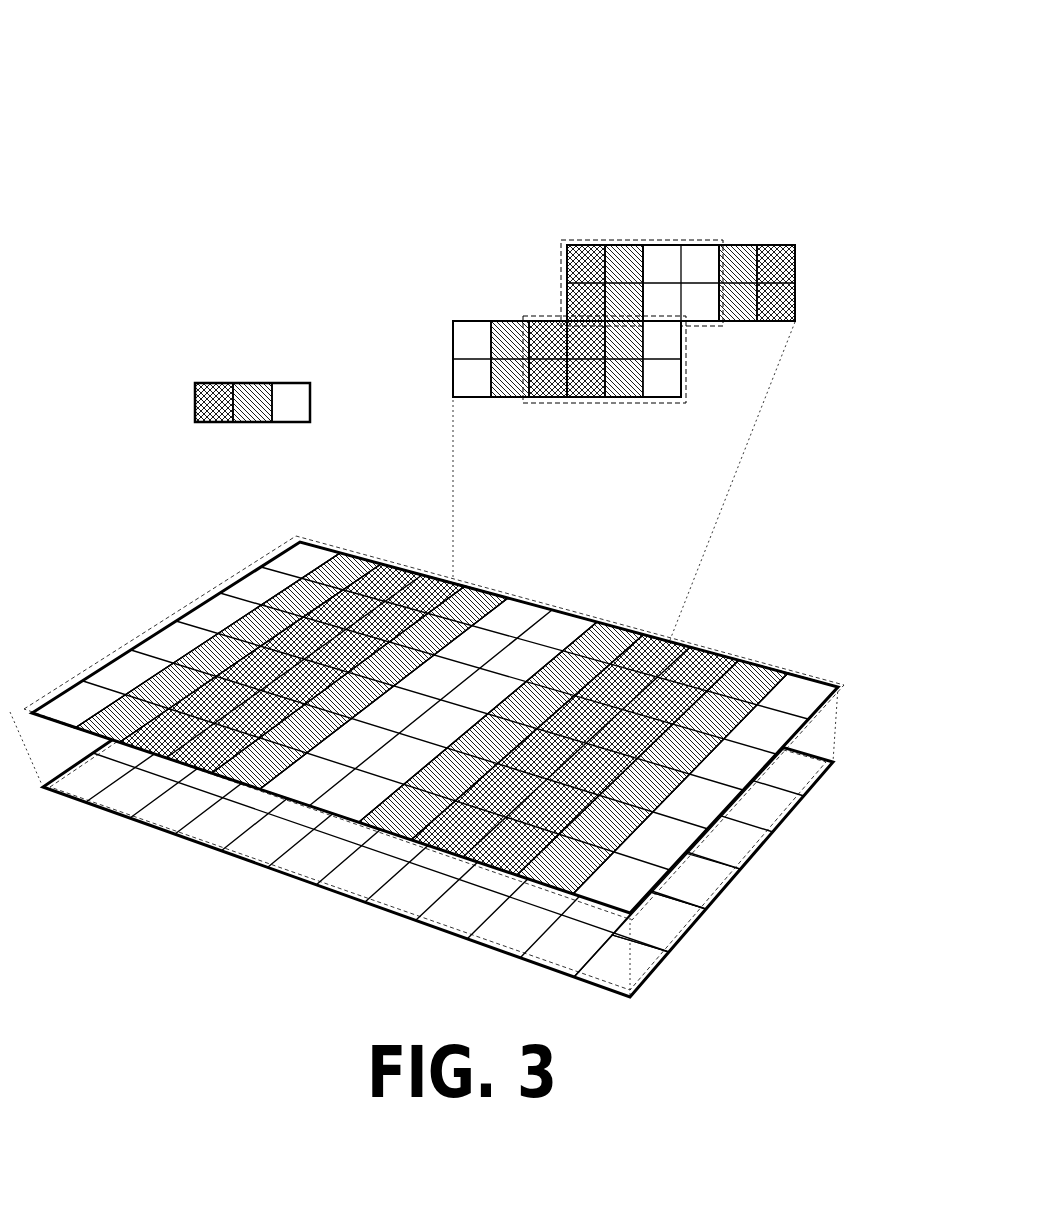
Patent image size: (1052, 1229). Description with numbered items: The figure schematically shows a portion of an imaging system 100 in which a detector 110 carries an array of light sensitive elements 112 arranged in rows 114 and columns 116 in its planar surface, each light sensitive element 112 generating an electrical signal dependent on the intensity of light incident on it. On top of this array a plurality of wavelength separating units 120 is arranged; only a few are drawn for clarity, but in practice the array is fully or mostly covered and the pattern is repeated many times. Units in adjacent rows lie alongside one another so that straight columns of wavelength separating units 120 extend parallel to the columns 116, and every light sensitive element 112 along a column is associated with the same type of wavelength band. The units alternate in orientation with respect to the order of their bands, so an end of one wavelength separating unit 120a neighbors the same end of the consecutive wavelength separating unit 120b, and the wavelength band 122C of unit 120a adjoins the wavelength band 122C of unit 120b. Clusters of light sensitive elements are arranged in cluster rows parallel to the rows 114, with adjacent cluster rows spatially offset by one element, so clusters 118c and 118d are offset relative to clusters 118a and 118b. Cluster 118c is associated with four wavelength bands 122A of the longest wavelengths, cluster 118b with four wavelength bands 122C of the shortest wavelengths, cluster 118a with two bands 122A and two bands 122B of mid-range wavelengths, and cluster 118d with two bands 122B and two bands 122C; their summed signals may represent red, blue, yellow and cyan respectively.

The imaging system 100 is at (151, 101).
The detector 110 is at (336, 918).
The light sensitive element 112 is at (683, 900).
The rows 114 is at (215, 778).
The columns 116 is at (118, 646).
The cluster 118a is at (602, 244).
The cluster 118b is at (698, 244).
The cluster 118c is at (567, 408).
The cluster 118d is at (650, 405).
The wavelength separating unit 120 is at (253, 370).
The wavelength separating unit 120a is at (546, 281).
The wavelength separating unit 120b is at (818, 266).
The wavelength band 122A is at (400, 565).
The wavelength band 122B is at (346, 556).
The wavelength band 122C is at (302, 556).